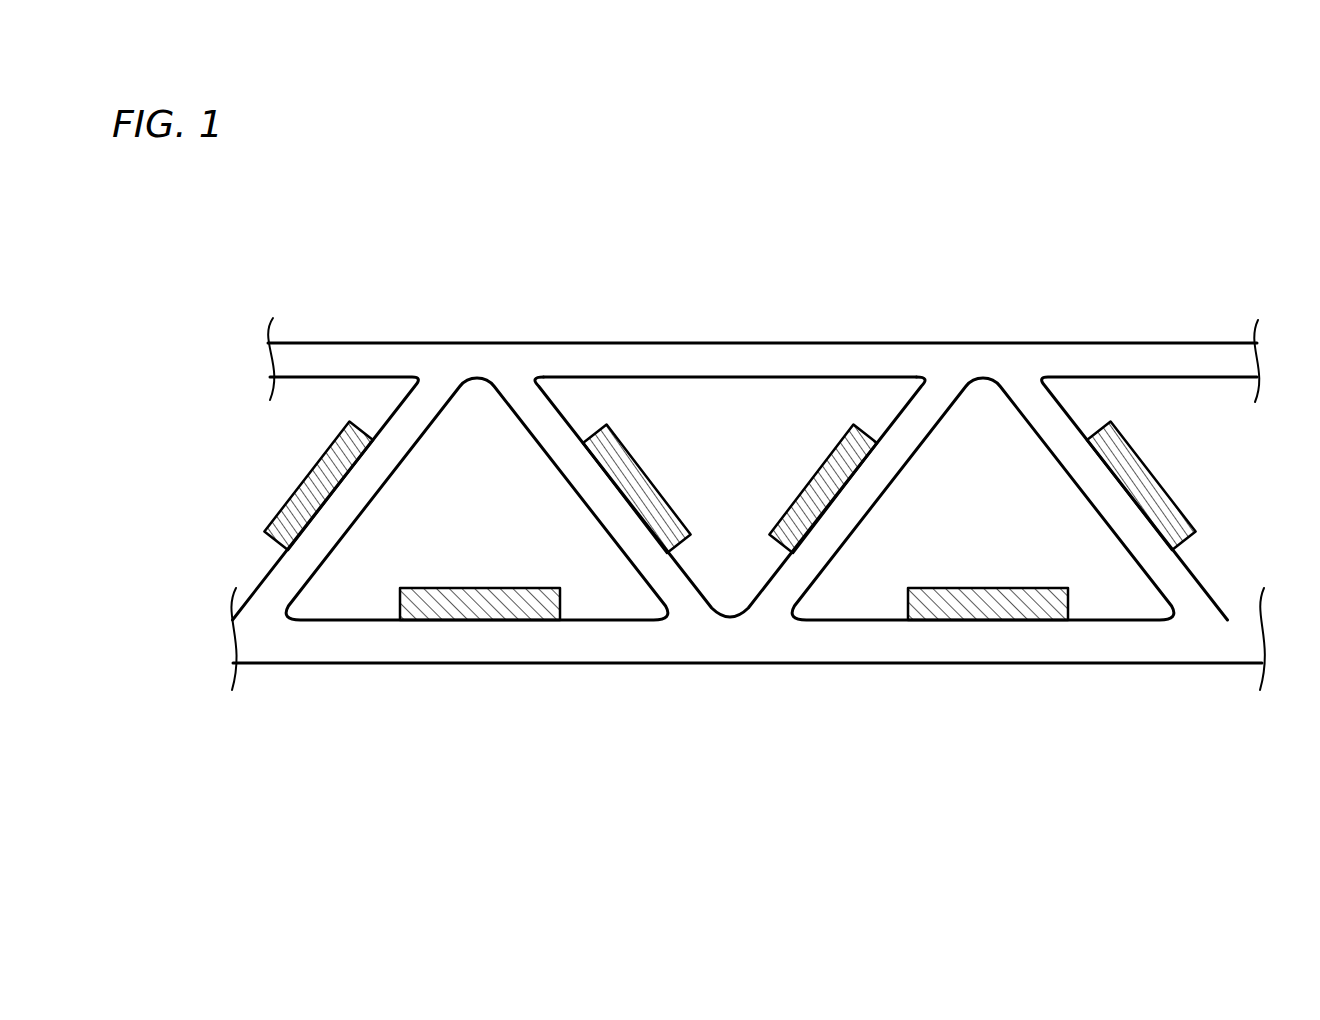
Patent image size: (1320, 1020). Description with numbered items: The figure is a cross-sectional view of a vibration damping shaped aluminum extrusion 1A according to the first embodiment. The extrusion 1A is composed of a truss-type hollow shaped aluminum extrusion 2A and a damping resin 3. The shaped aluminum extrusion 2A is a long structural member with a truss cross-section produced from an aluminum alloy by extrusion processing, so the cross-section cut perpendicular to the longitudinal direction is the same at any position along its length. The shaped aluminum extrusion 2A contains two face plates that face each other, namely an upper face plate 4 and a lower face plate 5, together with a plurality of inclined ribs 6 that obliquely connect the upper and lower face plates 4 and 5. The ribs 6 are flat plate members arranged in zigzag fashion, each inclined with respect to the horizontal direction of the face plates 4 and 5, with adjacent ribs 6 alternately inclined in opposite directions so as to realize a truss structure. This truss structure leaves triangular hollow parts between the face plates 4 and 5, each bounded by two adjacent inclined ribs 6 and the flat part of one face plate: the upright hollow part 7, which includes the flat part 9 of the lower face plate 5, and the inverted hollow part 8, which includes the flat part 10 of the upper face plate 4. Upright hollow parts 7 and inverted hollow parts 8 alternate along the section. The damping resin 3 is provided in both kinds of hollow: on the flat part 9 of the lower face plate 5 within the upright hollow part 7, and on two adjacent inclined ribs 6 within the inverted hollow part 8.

The vibration damping shaped aluminum extrusion 1A is at (921, 235).
The shaped aluminum extrusion 2A is at (1124, 320).
The damping resin 3 is at (302, 482).
The upper face plate 4 is at (477, 343).
The lower face plate 5 is at (735, 663).
The inclined rib 6 is at (412, 445).
The upright hollow part 7 is at (1100, 560).
The inverted hollow part 8 is at (735, 543).
The flat part 9 is at (876, 622).
The flat part 10 is at (757, 380).